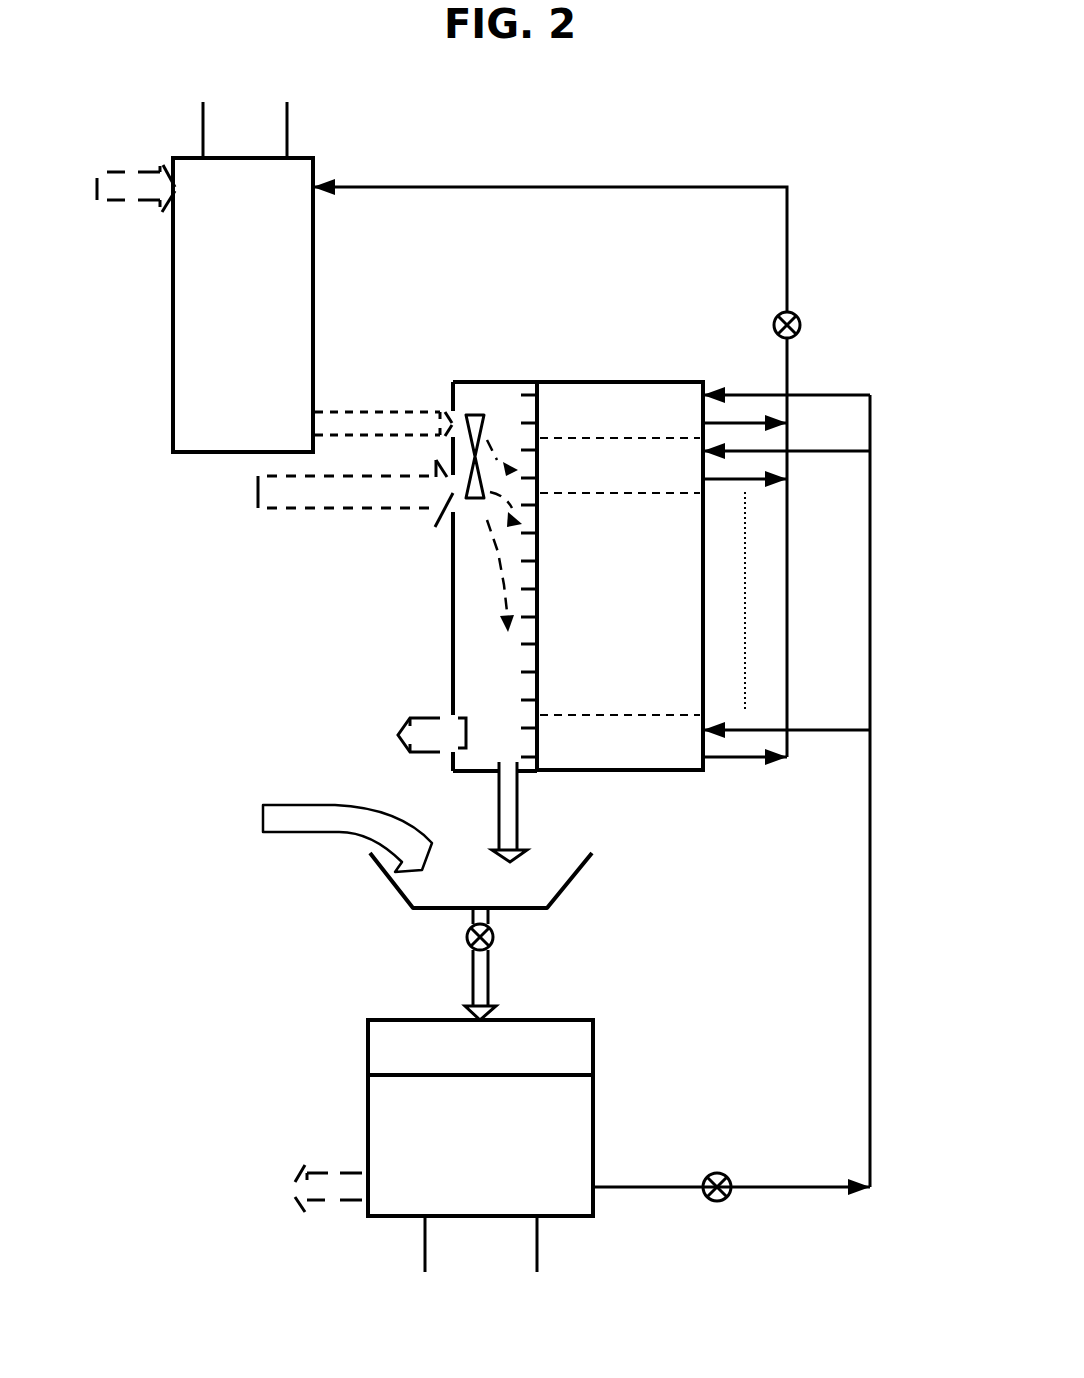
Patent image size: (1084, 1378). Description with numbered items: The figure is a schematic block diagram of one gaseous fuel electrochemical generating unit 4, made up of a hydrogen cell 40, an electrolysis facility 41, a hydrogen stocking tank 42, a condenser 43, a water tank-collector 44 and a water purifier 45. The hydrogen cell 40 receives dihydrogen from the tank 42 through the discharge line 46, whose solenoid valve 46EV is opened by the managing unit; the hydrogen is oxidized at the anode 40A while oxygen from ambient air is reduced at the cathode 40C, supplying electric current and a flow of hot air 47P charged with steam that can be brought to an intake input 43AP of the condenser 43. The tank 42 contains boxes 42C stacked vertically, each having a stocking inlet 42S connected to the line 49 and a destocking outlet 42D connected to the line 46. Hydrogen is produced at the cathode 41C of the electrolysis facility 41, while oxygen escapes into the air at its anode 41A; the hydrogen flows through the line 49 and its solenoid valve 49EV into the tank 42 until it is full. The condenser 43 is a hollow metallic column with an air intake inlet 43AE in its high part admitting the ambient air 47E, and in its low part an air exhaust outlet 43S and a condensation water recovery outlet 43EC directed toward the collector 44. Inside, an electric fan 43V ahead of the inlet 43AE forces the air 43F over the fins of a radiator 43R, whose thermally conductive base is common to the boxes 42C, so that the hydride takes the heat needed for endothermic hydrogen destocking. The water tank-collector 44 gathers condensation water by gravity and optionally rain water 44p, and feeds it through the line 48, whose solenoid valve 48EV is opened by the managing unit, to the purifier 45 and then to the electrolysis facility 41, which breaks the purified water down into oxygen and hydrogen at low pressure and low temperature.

The electrochemical generating unit 4 is at (740, 135).
The hydrogen cell 40 is at (173, 335).
The anode of the cell 40A is at (290, 157).
The cathode of the cell 40C is at (200, 157).
The electrolysis facility 41 is at (368, 1130).
The anode of the electrolysis facility 41A is at (423, 1218).
The cathode of the electrolysis facility 41C is at (540, 1218).
The hydrogen stocking tank 42 is at (582, 380).
The boxes 42C is at (640, 390).
The stocking inlet 42S is at (710, 393).
The destocking outlet 42D is at (710, 760).
The condenser 43 is at (452, 647).
The electric fan 43V is at (470, 395).
The radiator 43R is at (517, 390).
The intake input of the condenser 43AP is at (445, 410).
The air intake inlet 43AE is at (447, 518).
The forced air 43F is at (497, 566).
The air exhaust outlet 43S is at (437, 718).
The condensation water recovery outlet 43EC is at (520, 790).
The water tank-collector 44 is at (575, 887).
The rain water 44p is at (262, 822).
The water purifier 45 is at (368, 1050).
The discharge line 46 is at (790, 203).
The solenoid valve 46EV is at (802, 332).
The hot air charged with steam 47P is at (330, 410).
The ambient air 47E is at (290, 509).
The line 48 is at (470, 1000).
The solenoid valve 48EV is at (466, 940).
The line 49 is at (872, 940).
The solenoid valve 49EV is at (720, 1172).